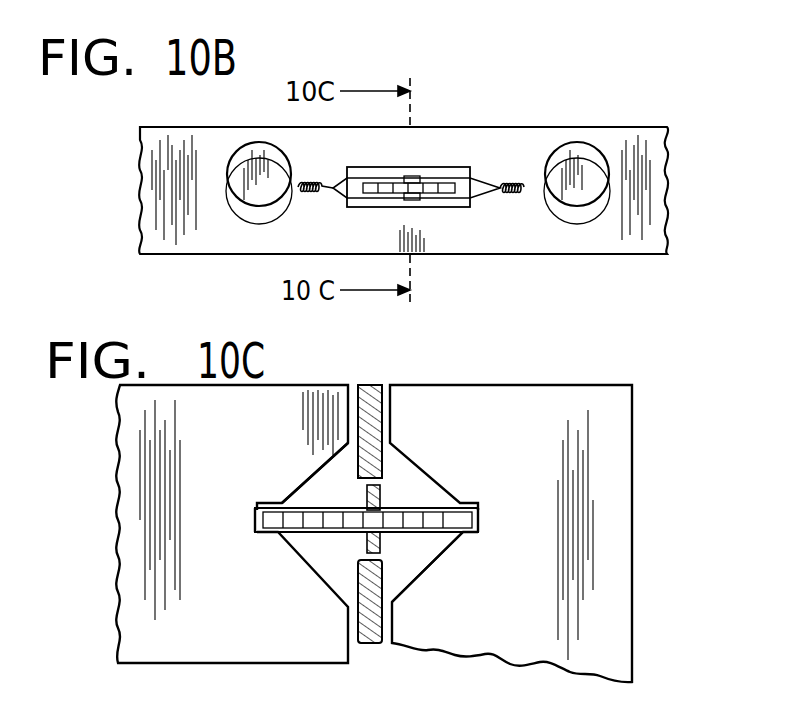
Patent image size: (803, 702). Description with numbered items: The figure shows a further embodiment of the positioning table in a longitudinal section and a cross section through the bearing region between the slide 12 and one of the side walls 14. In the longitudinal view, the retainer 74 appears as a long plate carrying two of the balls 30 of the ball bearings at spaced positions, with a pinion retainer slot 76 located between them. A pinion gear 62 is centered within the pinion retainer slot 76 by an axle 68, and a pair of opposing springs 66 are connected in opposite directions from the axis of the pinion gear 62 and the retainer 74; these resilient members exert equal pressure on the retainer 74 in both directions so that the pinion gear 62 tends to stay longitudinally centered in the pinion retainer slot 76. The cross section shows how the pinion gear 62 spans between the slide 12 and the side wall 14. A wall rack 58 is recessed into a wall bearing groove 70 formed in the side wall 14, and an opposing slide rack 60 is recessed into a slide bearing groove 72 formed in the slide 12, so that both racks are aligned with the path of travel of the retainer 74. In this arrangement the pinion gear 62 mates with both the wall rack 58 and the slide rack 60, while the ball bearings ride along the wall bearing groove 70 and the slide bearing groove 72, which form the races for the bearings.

In FIG. 10C, the slide 12 is at (292, 385).
In FIG. 10C, the side walls 14 is at (632, 495).
In FIG. 10B, the balls 30 is at (576, 157).
In FIG. 10C, the wall rack 58 is at (478, 520).
In FIG. 10C, the slide rack 60 is at (258, 534).
In FIG. 10B, the pinion gear 62 is at (418, 182).
In FIG. 10C, the pinion gear 62 is at (412, 512).
In FIG. 10B, the springs 66 is at (313, 196).
In FIG. 10B, the axle 68 is at (404, 176).
In FIG. 10C, the axle 68 is at (368, 548).
In FIG. 10C, the wall bearing groove 70 is at (428, 560).
In FIG. 10C, the slide bearing groove 72 is at (318, 468).
In FIG. 10B, the retainer 74 is at (660, 127).
In FIG. 10C, the retainer 74 is at (374, 400).
In FIG. 10B, the pinion retainer slot 76 is at (462, 168).